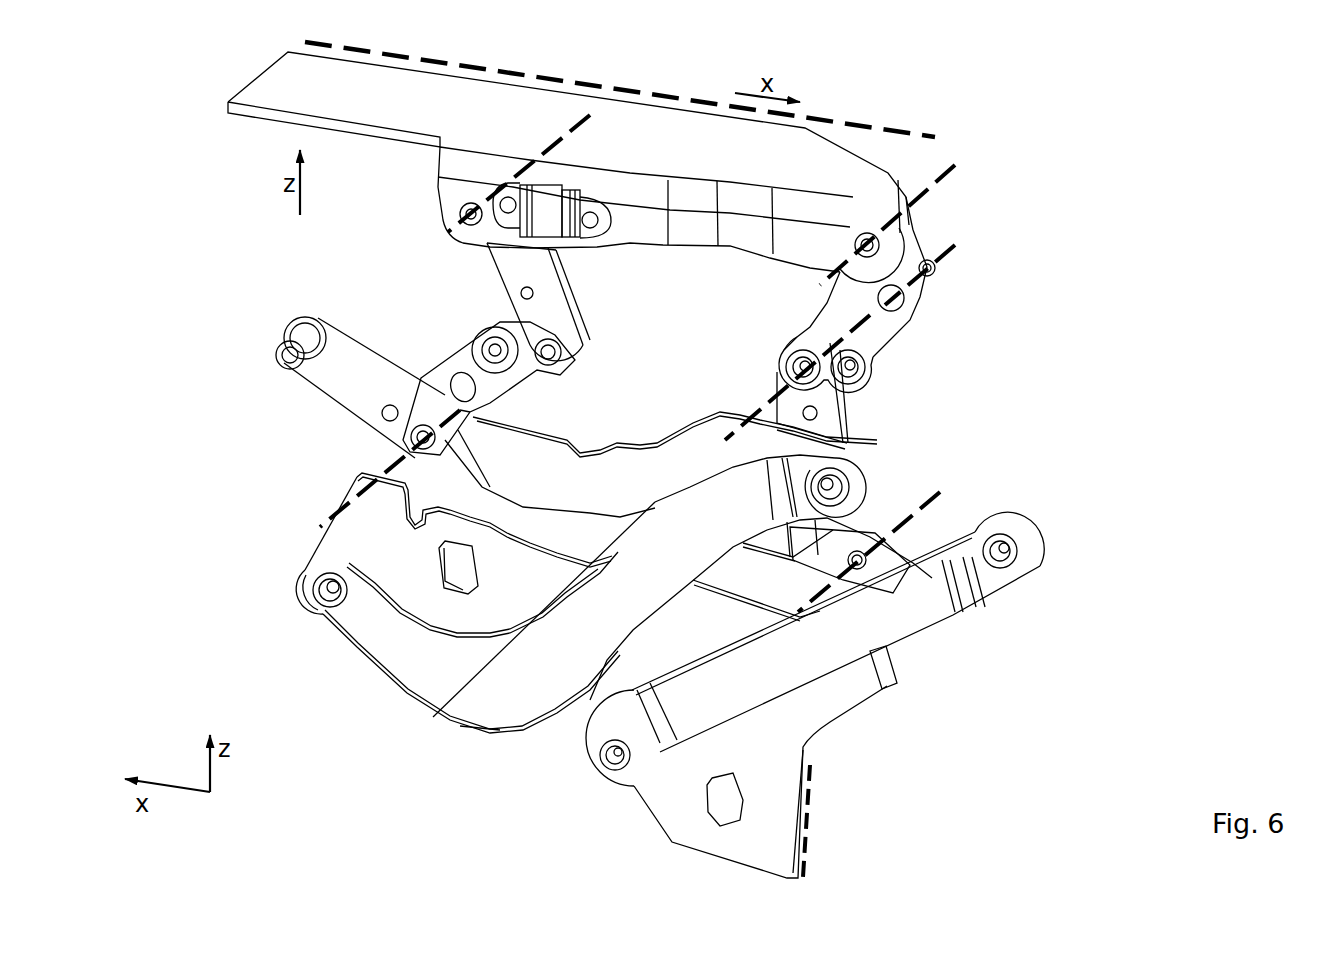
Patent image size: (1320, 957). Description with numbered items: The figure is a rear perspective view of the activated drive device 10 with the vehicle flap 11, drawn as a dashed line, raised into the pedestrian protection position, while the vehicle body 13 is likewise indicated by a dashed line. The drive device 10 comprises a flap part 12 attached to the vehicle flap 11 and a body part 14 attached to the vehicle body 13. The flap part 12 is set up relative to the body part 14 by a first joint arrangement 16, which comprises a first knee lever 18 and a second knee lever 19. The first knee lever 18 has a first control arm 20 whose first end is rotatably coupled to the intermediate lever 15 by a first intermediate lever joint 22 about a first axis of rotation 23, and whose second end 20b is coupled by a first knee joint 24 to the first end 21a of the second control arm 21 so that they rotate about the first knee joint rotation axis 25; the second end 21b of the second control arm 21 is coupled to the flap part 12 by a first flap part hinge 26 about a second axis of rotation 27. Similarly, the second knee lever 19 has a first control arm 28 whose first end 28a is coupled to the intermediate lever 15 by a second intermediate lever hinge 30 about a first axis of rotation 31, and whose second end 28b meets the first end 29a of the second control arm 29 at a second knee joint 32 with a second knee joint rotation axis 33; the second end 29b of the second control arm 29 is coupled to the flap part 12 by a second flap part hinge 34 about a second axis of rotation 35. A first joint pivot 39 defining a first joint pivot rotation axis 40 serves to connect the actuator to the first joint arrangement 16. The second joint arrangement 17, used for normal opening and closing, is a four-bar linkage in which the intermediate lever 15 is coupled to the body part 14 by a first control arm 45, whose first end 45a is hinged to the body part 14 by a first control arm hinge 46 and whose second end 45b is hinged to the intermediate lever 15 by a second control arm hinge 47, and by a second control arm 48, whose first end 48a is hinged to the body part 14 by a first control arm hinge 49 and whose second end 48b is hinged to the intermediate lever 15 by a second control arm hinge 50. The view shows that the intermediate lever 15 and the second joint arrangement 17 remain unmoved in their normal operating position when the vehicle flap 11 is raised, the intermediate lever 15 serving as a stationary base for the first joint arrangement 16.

The drive device 10 is at (140, 146).
The vehicle flap 11 is at (880, 127).
The flap part 12 is at (656, 152).
The vehicle body 13 is at (808, 842).
The body part 14 is at (703, 646).
The intermediate lever 15 is at (634, 498).
The first joint arrangement 16 is at (440, 248).
The second joint arrangement 17 is at (490, 762).
The first knee lever 18 is at (920, 360).
The second knee lever 19 is at (400, 276).
The first control arm 20 is at (830, 415).
The second end 20b is at (797, 363).
The second control arm 21 is at (843, 302).
The first end 21a is at (782, 331).
The second end 21b is at (918, 226).
The first intermediate lever joint 22 is at (848, 562).
The first axis of rotation 23 is at (927, 494).
The first knee joint 24 is at (795, 375).
The first knee joint rotation axis 25 is at (865, 348).
The first flap part hinge 26 is at (870, 243).
The second axis of rotation 27 is at (957, 168).
The first control arm 28 is at (470, 367).
The first end 28a is at (418, 372).
The second end 28b is at (584, 344).
The second control arm 29 is at (548, 279).
The first end 29a is at (566, 360).
The second end 29b is at (576, 262).
The second intermediate lever hinge 30 is at (413, 438).
The first axis of rotation 31 is at (337, 512).
The second knee joint 32 is at (552, 356).
The second knee joint rotation axis 33 is at (492, 404).
The second flap part hinge 34 is at (467, 209).
The second axis of rotation 35 is at (580, 117).
The first joint pivot 39 is at (935, 270).
The first joint pivot rotation axis 40 is at (957, 247).
The first control arm 45 is at (501, 704).
The first end 45a is at (326, 612).
The second end 45b is at (858, 483).
The first control arm hinge 46 is at (326, 588).
The second control arm hinge 47 is at (832, 483).
The second control arm 48 is at (834, 664).
The first end 48a is at (620, 779).
The second end 48b is at (993, 527).
The first control arm hinge 49 is at (611, 752).
The second control arm hinge 50 is at (1008, 550).